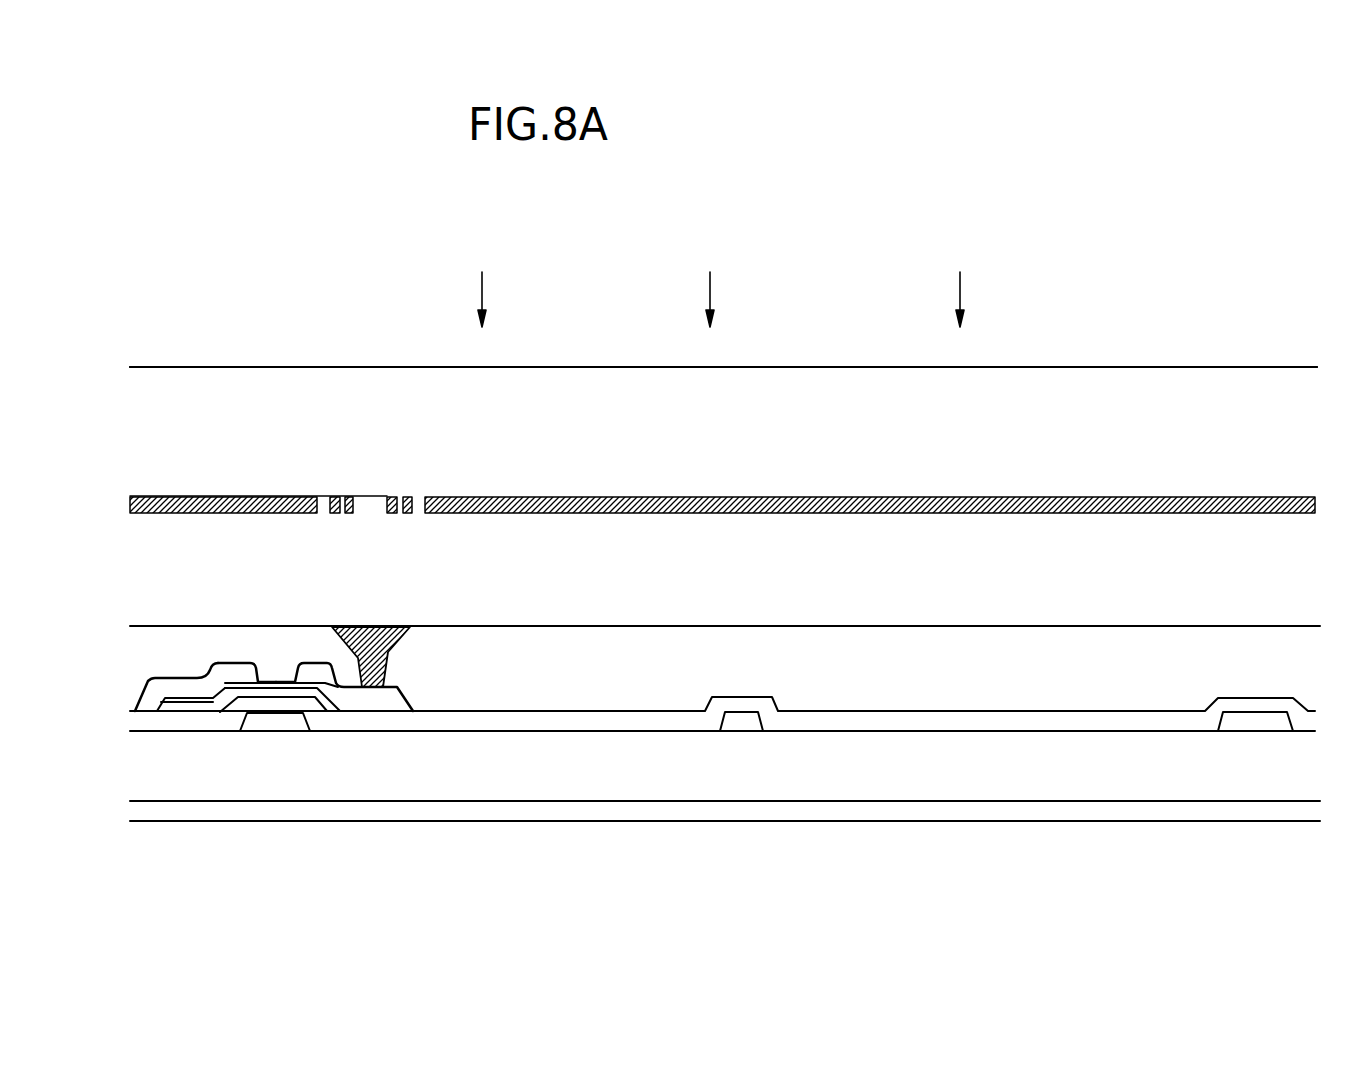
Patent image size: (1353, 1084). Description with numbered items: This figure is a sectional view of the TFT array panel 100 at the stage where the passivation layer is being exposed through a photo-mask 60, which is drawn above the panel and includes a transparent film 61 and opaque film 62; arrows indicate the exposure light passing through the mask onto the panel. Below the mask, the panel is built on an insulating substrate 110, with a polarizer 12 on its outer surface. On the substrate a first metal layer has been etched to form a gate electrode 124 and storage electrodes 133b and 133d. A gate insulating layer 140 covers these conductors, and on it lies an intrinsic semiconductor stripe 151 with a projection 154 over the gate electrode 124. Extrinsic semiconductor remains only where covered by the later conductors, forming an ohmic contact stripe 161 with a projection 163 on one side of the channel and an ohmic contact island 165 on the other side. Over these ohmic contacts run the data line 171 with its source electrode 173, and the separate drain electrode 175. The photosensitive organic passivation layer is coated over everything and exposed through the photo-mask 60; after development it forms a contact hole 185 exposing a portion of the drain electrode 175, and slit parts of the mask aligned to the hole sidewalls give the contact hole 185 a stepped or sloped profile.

The photo-mask 60 is at (1128, 365).
The transparent film 61 is at (562, 390).
The opaque film 62 is at (460, 496).
The TFT array panel 100 is at (126, 775).
The insulating substrate 110 is at (912, 775).
The polarizer 12 is at (1110, 808).
The gate electrode 124 is at (290, 722).
The storage electrode 133b is at (1257, 723).
The storage electrode 133d is at (730, 722).
The gate insulating layer 140 is at (822, 720).
The intrinsic semiconductor stripe 151 is at (205, 705).
The projection 154 is at (265, 703).
The ohmic contact stripe 161 is at (180, 704).
The projection 163 is at (223, 686).
The ohmic contact island 165 is at (308, 688).
The data line 171 is at (182, 688).
The source electrode 173 is at (230, 670).
The drain electrode 175 is at (372, 702).
The contact hole 185 is at (387, 650).